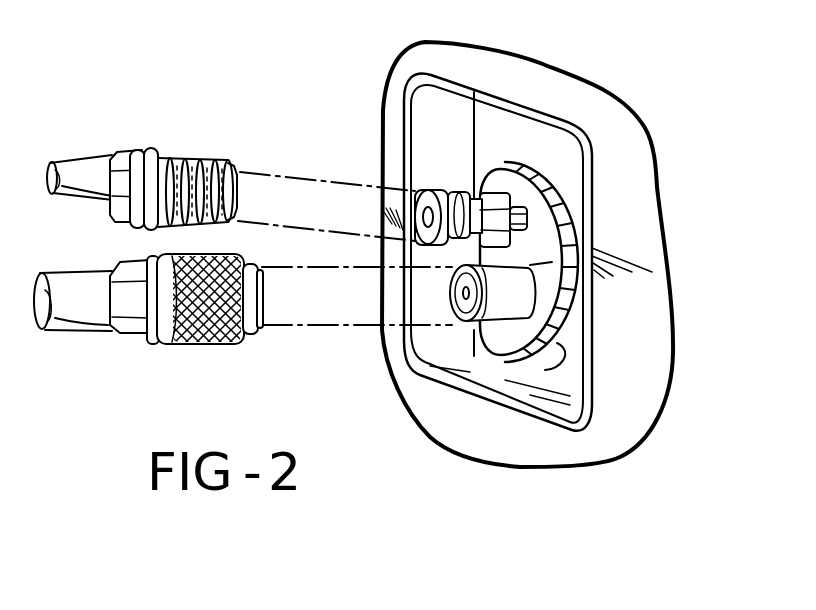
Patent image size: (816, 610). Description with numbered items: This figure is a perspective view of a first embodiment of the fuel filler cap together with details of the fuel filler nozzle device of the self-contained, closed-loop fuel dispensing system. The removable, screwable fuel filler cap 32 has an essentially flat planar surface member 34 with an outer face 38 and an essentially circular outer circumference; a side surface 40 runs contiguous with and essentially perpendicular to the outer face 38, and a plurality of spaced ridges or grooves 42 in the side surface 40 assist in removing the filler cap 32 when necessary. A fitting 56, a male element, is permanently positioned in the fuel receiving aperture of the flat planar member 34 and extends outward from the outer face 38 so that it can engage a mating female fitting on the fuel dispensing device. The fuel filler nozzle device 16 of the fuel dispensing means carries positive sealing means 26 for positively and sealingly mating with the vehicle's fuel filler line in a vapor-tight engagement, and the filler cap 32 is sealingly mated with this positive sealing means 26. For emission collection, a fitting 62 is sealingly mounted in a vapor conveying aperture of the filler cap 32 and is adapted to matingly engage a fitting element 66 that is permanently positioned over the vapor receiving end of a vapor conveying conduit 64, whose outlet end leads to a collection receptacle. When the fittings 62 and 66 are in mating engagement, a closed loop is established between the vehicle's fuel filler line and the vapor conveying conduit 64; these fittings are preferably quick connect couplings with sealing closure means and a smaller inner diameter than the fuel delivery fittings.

The fuel filler nozzle device 16 is at (110, 347).
The positive sealing means 26 is at (200, 343).
The fuel filler cap 32 is at (575, 327).
The flat planar surface member 34 is at (507, 274).
The outer face 38 is at (550, 210).
The side surface 40 is at (566, 128).
The spaced ridges or grooves 42 is at (557, 343).
The fitting 56 is at (480, 326).
The fitting 62 is at (483, 196).
The vapor conveying conduit 64 is at (68, 162).
The fitting element 66 is at (178, 153).